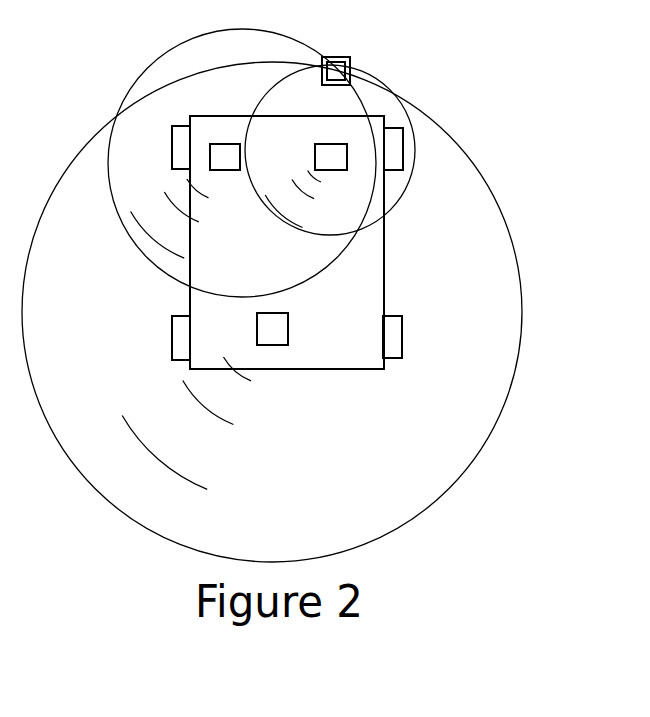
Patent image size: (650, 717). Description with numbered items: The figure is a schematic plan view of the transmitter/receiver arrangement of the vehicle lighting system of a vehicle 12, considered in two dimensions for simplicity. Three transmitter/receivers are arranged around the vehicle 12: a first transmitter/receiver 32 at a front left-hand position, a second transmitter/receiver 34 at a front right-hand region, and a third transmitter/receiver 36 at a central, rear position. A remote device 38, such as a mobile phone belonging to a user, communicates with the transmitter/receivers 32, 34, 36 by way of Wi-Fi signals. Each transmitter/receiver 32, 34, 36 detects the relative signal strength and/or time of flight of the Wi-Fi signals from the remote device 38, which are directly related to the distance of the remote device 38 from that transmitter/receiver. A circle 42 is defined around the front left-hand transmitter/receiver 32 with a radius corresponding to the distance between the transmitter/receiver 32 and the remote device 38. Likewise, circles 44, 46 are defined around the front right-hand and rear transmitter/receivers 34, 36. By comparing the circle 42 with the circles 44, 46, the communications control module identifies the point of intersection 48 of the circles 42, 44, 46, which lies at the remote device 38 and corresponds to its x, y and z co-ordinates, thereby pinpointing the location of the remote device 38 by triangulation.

The vehicle 12 is at (398, 68).
The first transmitter/receiver 32 is at (237, 162).
The second transmitter/receiver 34 is at (335, 153).
The third transmitter/receiver 36 is at (273, 328).
The remote device 38 is at (337, 58).
The point of intersection 48 is at (340, 69).
The circle 42 is at (155, 58).
The circle 44 is at (415, 143).
The circle 46 is at (445, 493).